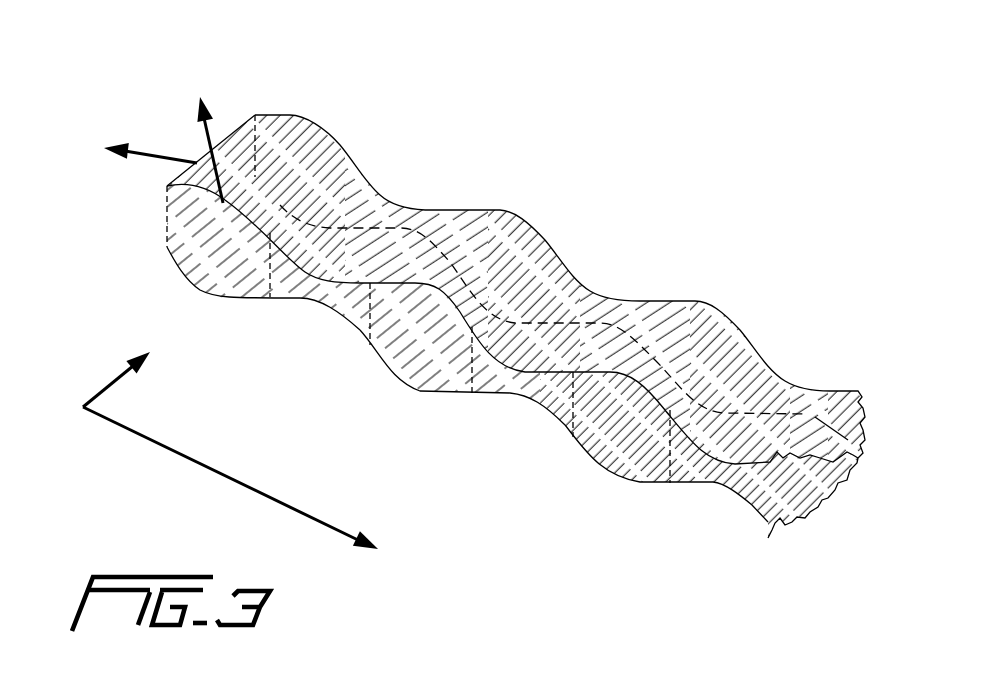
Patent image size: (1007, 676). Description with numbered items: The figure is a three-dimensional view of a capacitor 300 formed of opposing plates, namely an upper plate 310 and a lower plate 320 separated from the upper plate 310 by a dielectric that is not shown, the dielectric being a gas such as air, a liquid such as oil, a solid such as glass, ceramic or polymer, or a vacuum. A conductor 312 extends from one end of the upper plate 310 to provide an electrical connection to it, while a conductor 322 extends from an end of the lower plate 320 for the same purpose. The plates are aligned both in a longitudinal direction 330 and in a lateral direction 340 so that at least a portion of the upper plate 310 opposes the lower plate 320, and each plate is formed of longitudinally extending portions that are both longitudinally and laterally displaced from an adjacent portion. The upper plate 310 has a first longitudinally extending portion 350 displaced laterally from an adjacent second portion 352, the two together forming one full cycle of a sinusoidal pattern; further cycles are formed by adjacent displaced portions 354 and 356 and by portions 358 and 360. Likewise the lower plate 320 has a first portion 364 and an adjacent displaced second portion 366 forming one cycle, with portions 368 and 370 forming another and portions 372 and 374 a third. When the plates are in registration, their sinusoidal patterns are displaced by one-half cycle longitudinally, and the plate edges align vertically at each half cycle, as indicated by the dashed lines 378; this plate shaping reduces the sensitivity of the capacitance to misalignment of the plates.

The capacitor 300 is at (778, 114).
The upper plate 310 is at (545, 297).
The conductor 312 is at (143, 150).
The lower plate 320 is at (445, 353).
The conductor 322 is at (210, 123).
The longitudinal direction 330 is at (247, 489).
The lateral direction 340 is at (131, 370).
The first longitudinally extending portion 350 is at (325, 118).
The second portion 352 is at (398, 203).
The portion 354 is at (527, 210).
The portion 356 is at (596, 293).
The portion 358 is at (723, 308).
The portion 360 is at (808, 392).
The first longitudinally extending portion 364 is at (193, 276).
The second portion 366 is at (323, 301).
The portion 368 is at (412, 378).
The portion 370 is at (537, 398).
The portion 372 is at (612, 470).
The portion 374 is at (737, 487).
The dashed lines 378 is at (167, 213).